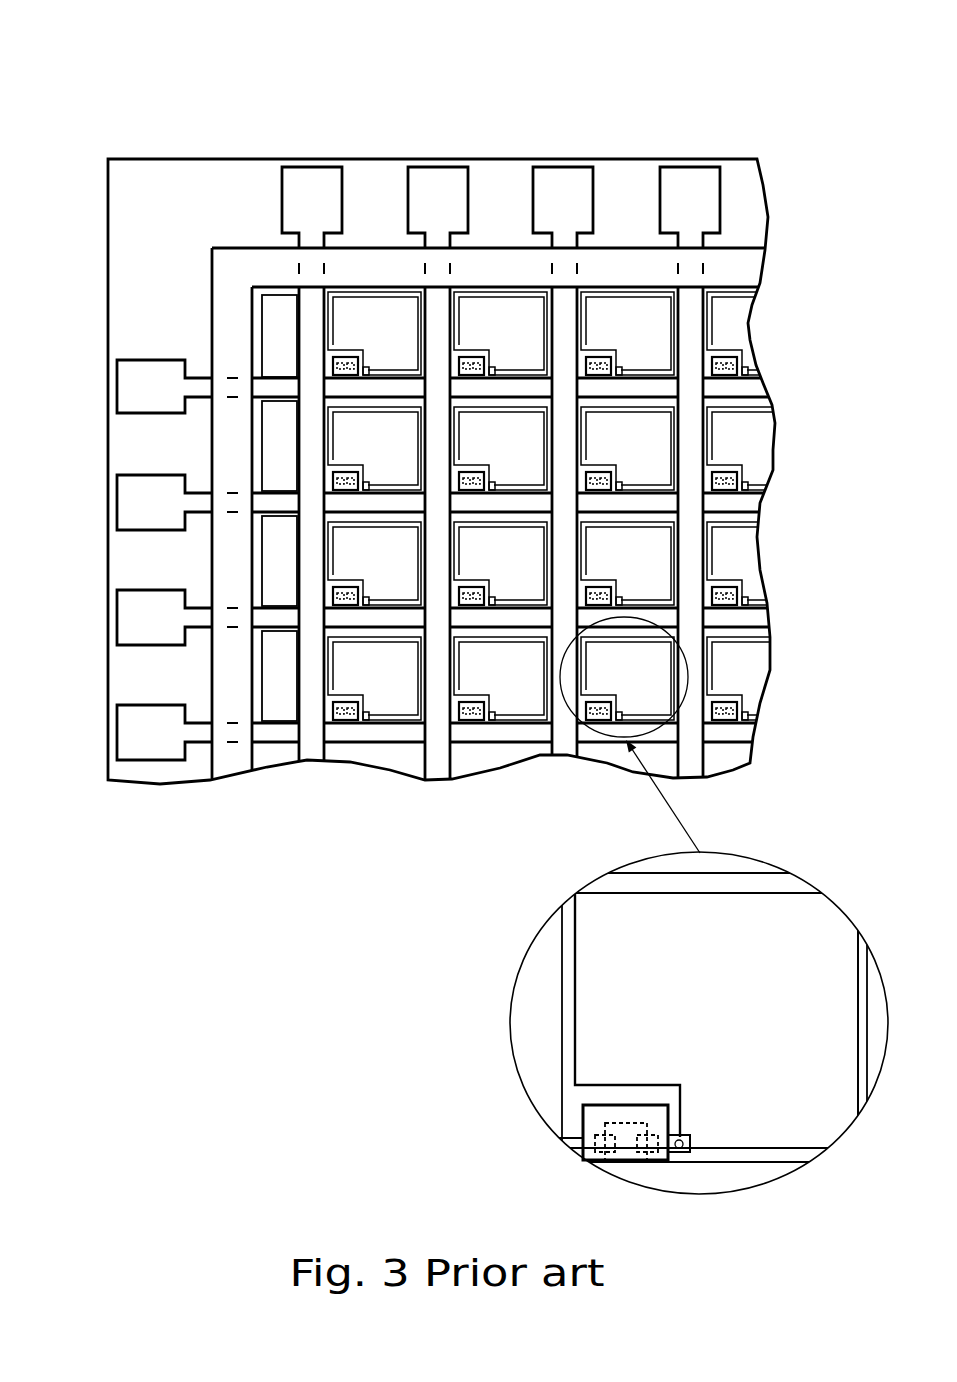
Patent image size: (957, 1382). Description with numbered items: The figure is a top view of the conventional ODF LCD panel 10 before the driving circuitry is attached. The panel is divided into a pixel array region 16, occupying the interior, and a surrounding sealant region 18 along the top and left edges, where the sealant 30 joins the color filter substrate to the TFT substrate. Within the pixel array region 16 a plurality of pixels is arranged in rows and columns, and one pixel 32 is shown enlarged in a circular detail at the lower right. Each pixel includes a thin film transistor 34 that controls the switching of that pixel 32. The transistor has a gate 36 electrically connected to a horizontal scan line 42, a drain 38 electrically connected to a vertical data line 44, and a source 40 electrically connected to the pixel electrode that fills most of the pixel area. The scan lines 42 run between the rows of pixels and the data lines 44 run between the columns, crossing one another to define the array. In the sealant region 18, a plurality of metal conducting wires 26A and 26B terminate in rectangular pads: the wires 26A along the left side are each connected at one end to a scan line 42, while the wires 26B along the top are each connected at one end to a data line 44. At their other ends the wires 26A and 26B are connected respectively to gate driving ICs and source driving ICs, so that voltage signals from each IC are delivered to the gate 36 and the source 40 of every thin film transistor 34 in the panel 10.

The ODF LCD panel 10 is at (700, 48).
The pixel array region 16 is at (755, 142).
The sealant region 18 is at (274, 105).
The metal conducting wires 26A is at (200, 732).
The metal conducting wires 26B is at (688, 243).
The sealant 30 is at (737, 270).
The pixel 32 is at (633, 938).
The thin film transistor 34 is at (631, 1168).
The gate 36 is at (628, 1128).
The source electrode 38 is at (600, 1142).
The source 40 is at (660, 1133).
The scan line 42 is at (747, 503).
The data line 44 is at (445, 763).